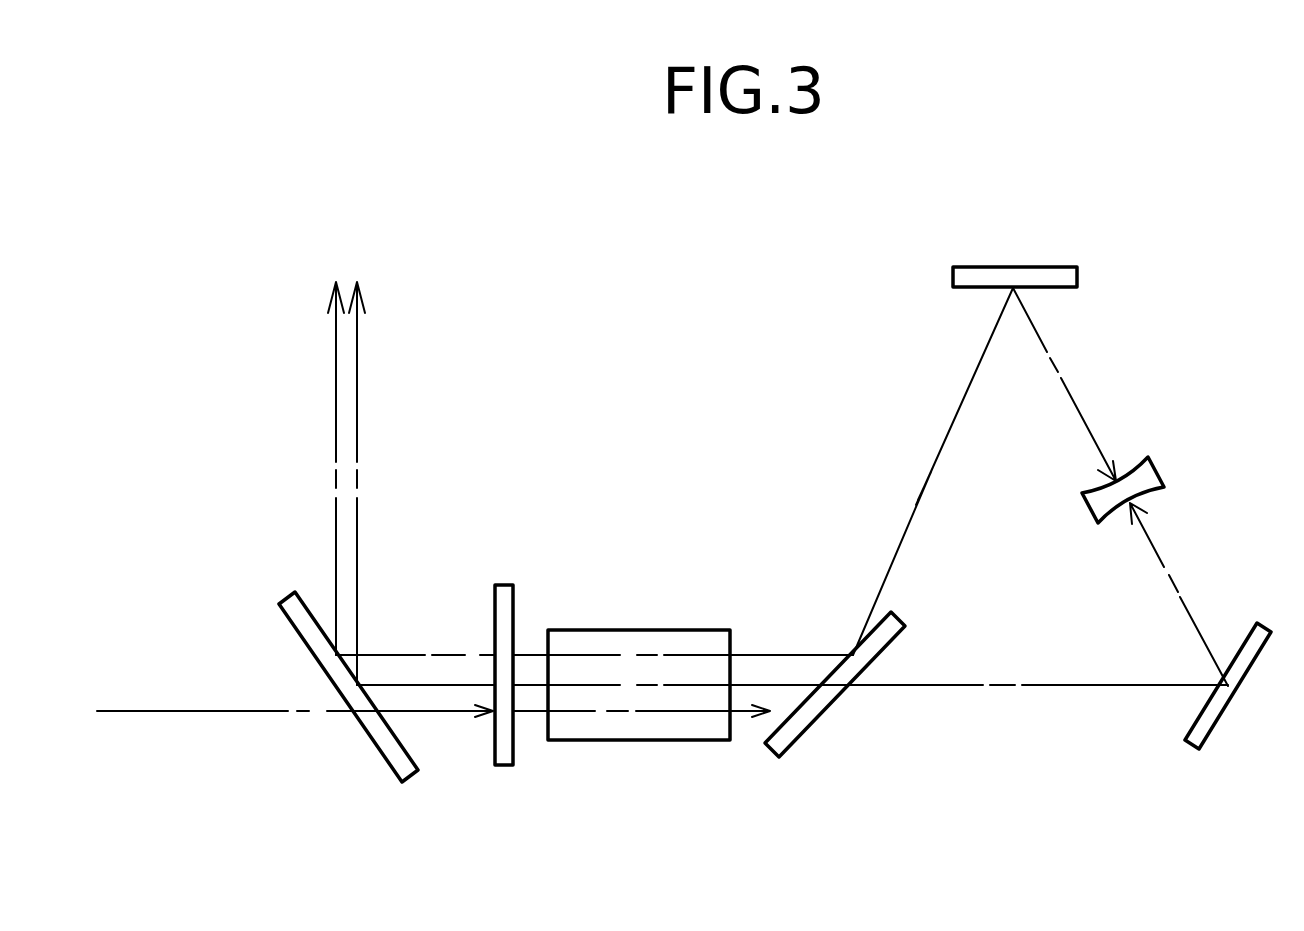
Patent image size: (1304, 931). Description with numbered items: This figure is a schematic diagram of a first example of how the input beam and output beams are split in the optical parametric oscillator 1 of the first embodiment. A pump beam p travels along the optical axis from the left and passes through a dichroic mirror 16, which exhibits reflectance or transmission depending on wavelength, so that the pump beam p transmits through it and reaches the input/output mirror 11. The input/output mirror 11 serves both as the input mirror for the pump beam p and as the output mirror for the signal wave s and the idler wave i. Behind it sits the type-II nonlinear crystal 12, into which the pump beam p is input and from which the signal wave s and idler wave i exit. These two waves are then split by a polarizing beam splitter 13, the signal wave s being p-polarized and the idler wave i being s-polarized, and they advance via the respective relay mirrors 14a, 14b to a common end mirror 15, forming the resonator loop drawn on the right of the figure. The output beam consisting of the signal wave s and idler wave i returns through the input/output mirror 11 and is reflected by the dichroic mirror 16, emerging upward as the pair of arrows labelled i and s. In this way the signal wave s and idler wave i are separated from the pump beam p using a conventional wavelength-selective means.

The optical parametric oscillator 1 is at (796, 433).
The input/output mirror 11 is at (503, 594).
The type-II nonlinear crystal 12 is at (640, 741).
The polarizing beam splitter 13 is at (815, 720).
The relay mirror 14a is at (1228, 705).
The relay mirror 14b is at (1036, 275).
The common end mirror 15 is at (1150, 467).
The dichroic mirror 16 is at (300, 645).
The pump beam p is at (273, 712).
The signal wave s is at (357, 438).
The idler wave i is at (336, 432).